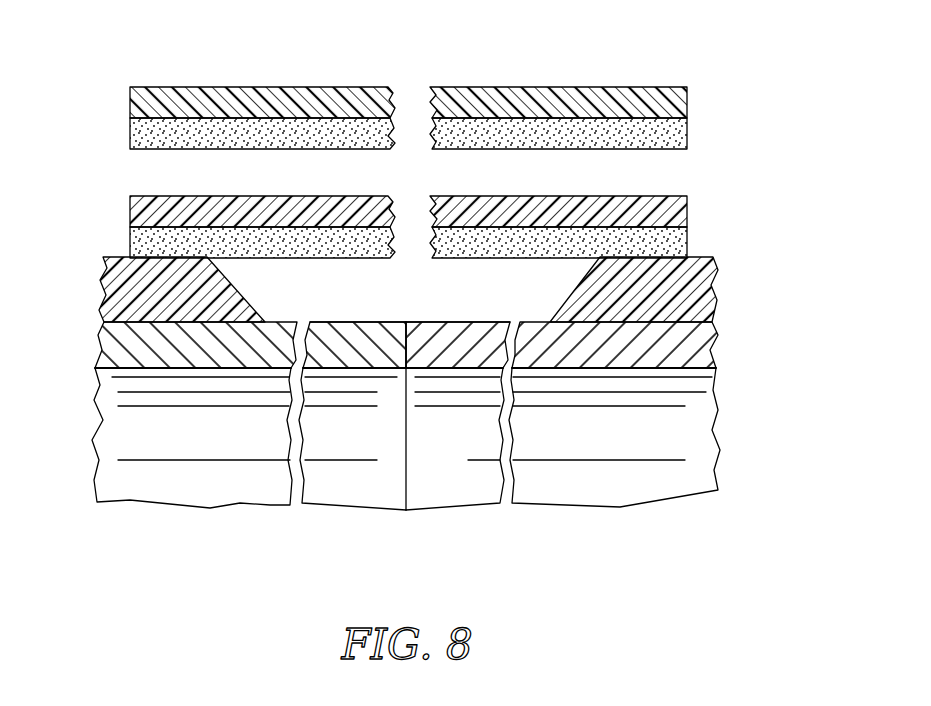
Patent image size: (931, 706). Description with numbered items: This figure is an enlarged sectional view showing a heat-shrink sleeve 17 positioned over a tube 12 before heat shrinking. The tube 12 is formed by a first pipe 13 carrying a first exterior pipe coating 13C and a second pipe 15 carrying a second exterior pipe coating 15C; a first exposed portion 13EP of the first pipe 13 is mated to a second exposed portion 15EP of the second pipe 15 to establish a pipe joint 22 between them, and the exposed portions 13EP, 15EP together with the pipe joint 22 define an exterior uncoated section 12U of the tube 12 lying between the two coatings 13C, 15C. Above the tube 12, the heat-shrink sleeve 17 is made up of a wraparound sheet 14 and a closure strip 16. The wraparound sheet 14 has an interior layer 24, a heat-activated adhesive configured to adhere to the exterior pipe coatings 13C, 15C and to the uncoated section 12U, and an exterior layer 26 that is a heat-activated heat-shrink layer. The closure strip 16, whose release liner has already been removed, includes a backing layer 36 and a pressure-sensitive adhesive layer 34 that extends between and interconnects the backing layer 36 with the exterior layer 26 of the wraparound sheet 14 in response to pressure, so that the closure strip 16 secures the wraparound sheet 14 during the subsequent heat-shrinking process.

The tube 12 is at (722, 412).
The exterior uncoated section 12U is at (407, 292).
The first pipe 13 is at (137, 506).
The first exterior pipe coating 13C is at (110, 289).
The first exposed portion 13EP is at (316, 494).
The wraparound sheet 14 is at (690, 227).
The second pipe 15 is at (624, 509).
The second exterior pipe coating 15C is at (706, 292).
The second exposed portion 15EP is at (448, 498).
The closure strip 16 is at (690, 117).
The heat-shrink sleeve 17 is at (786, 206).
The pipe joint 22 is at (406, 498).
The interior layer 24 is at (130, 243).
The exterior layer 26 is at (130, 213).
The pressure-sensitive adhesive layer 34 is at (130, 135).
The backing layer 36 is at (130, 100).